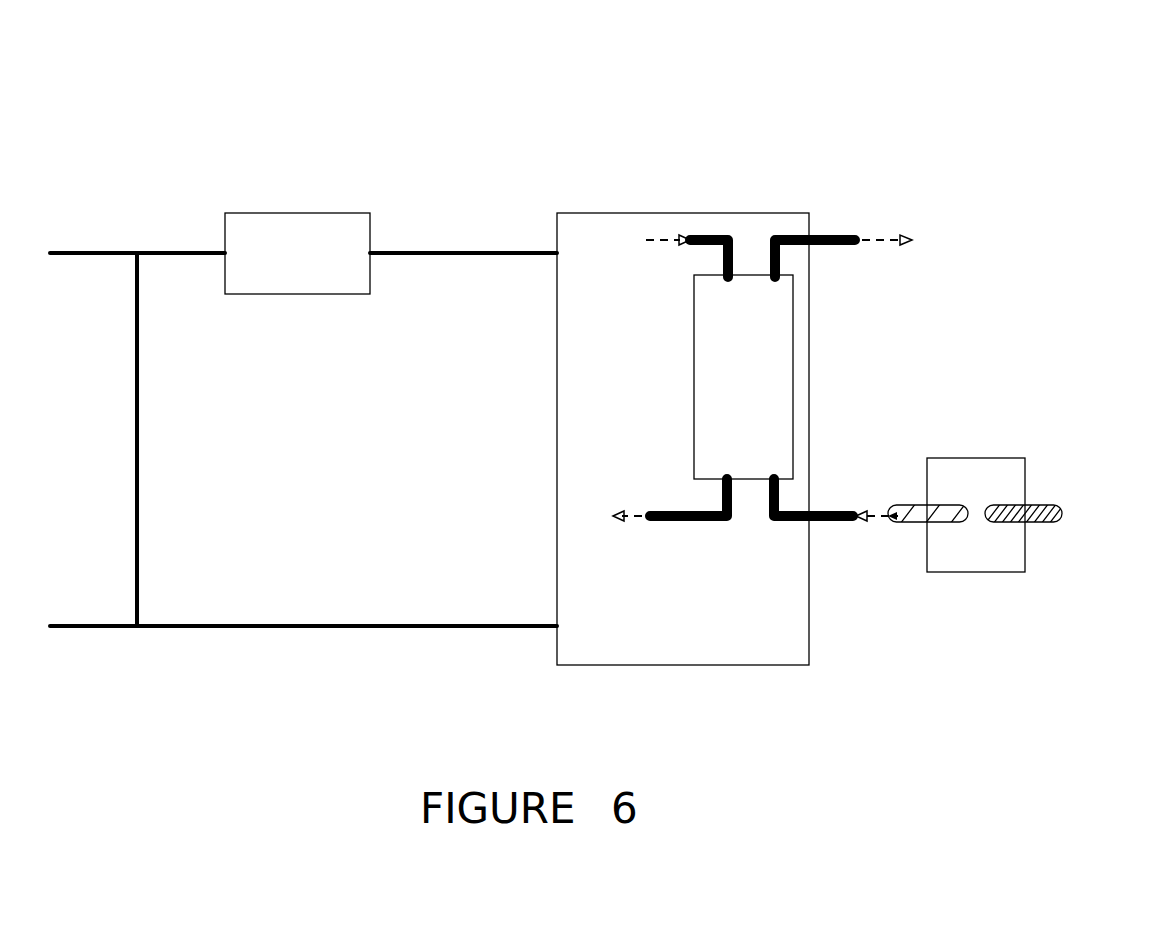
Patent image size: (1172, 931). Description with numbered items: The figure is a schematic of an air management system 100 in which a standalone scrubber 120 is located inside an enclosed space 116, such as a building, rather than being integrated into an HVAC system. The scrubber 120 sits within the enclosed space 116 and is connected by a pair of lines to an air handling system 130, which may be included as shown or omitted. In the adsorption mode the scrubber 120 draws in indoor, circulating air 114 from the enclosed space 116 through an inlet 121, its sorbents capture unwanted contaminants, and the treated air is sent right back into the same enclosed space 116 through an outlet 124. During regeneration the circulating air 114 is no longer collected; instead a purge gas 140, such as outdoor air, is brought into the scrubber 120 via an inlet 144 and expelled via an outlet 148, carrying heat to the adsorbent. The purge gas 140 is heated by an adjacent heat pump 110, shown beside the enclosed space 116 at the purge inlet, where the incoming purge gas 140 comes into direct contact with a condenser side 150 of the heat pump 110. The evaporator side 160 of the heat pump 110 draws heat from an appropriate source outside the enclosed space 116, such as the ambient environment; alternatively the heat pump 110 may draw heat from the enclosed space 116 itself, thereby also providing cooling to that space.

The air management system 100 is at (977, 110).
The heat pump 110 is at (972, 572).
The circulating air 114 is at (686, 240).
The enclosed space 116 is at (580, 213).
The scrubber 120 is at (694, 392).
The inlet 121 is at (718, 236).
The outlet 124 is at (706, 522).
The air handling system 130 is at (325, 213).
The purge gas 140 is at (876, 522).
The inlet 144 is at (832, 522).
The outlet 148 is at (838, 236).
The condenser side 150 is at (900, 505).
The evaporator side 160 is at (1062, 508).